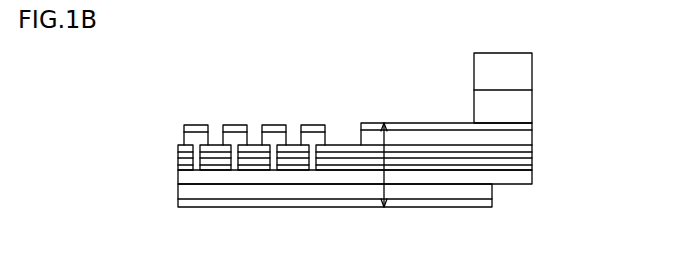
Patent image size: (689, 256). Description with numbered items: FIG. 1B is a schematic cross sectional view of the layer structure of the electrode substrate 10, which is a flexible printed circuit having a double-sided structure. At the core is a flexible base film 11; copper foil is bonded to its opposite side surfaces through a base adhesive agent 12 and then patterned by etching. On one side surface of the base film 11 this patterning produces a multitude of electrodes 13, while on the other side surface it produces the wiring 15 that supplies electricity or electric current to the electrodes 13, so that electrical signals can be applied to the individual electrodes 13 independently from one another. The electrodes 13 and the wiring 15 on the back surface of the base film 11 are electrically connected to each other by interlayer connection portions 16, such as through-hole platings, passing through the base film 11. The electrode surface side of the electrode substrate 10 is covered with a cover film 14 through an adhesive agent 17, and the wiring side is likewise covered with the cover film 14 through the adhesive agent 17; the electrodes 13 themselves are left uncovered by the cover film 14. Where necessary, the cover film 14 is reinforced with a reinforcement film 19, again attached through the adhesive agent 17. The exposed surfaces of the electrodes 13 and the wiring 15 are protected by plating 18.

The electrode substrate 10 is at (271, 86).
The base film 11 is at (178, 163).
The base adhesive agent 12 is at (178, 150).
The electrodes 13 is at (181, 147).
The cover film 14 is at (433, 123).
The wiring 15 is at (195, 173).
The interlayer connection portions 16 is at (178, 155).
The adhesive agent 17 is at (518, 108).
The plating 18 is at (198, 133).
The reinforcement film 19 is at (508, 63).